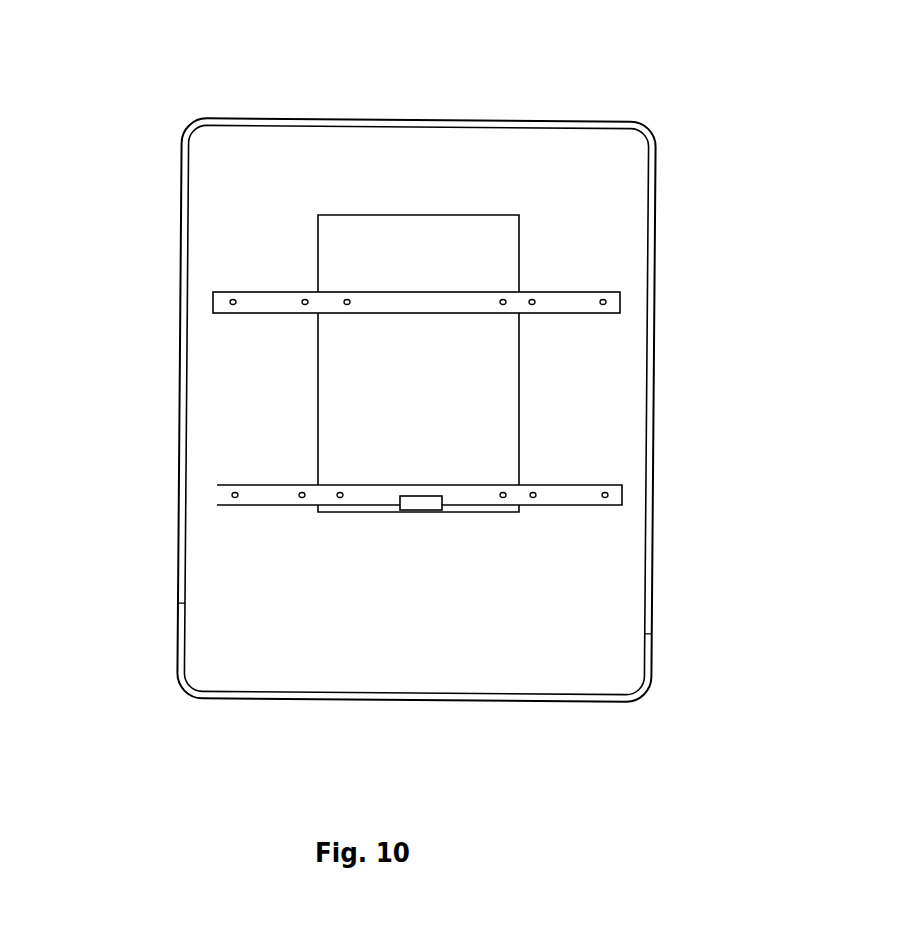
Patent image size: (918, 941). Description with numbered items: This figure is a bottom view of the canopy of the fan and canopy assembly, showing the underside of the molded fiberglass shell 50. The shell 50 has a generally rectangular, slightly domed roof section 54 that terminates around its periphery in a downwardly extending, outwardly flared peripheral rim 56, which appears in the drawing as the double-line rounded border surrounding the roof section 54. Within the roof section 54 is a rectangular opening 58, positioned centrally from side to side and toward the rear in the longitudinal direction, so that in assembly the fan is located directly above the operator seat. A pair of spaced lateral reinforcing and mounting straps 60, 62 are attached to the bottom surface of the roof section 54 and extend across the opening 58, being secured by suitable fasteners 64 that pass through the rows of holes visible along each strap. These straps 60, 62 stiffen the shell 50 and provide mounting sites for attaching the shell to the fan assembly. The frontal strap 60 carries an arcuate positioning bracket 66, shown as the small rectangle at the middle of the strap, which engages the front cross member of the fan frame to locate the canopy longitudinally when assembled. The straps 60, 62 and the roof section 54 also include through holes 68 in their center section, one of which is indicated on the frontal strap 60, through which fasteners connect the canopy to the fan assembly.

The molded fiberglass shell 50 is at (357, 125).
The roof section 54 is at (508, 660).
The peripheral rim 56 is at (187, 120).
The rectangular opening 58 is at (378, 257).
The frontal strap 60 is at (436, 494).
The rear strap 62 is at (223, 298).
The fasteners 64 is at (535, 493).
The arcuate positioning bracket 66 is at (428, 507).
The through holes 68 is at (340, 497).